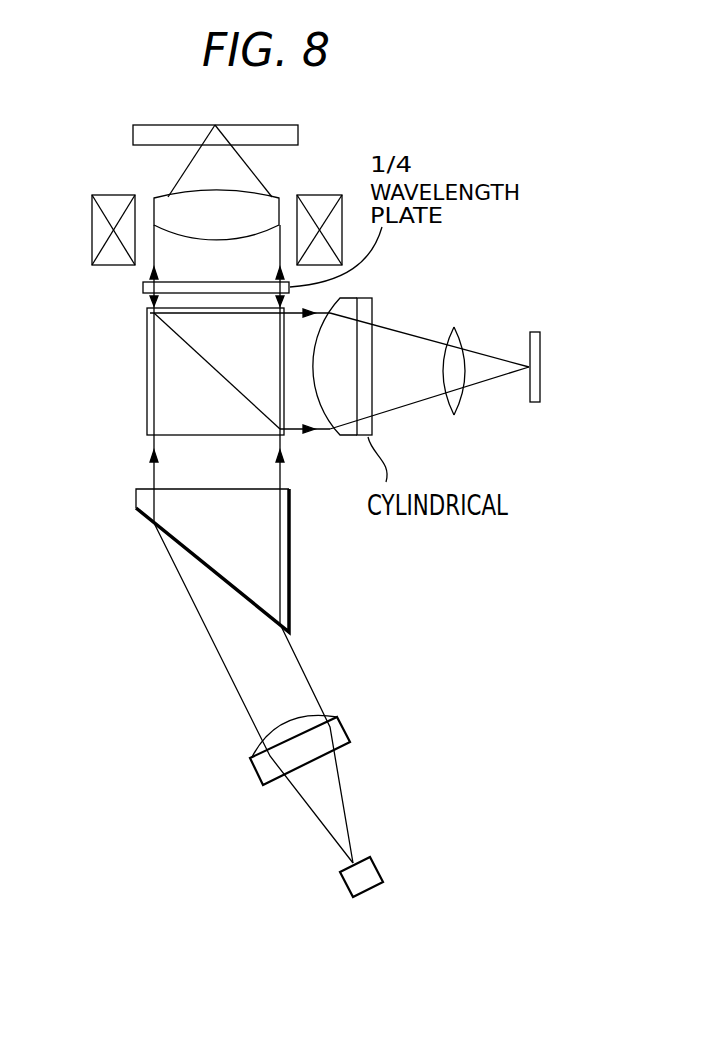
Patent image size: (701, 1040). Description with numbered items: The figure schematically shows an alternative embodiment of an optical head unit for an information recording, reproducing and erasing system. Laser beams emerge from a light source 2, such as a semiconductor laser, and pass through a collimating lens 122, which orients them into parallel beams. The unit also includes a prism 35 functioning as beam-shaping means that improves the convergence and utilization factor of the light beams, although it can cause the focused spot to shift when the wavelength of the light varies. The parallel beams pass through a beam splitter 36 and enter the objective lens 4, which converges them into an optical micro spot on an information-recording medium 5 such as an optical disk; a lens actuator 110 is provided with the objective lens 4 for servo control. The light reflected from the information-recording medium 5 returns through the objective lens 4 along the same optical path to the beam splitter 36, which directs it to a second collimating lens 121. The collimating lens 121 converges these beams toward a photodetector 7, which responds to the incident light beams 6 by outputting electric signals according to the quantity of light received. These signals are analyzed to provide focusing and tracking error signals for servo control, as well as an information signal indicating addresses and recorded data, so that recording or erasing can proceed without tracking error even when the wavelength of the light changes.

The light source 2 is at (377, 862).
The objective lens 4 is at (273, 195).
The information-recording medium 5 is at (153, 131).
The incident light beams 6 is at (452, 418).
The photodetector 7 is at (542, 352).
The prism 35 is at (136, 499).
The beam splitter 36 is at (147, 395).
The lens actuator 110 is at (92, 216).
The collimating lens 121 is at (347, 305).
The collimating lens 122 is at (344, 726).